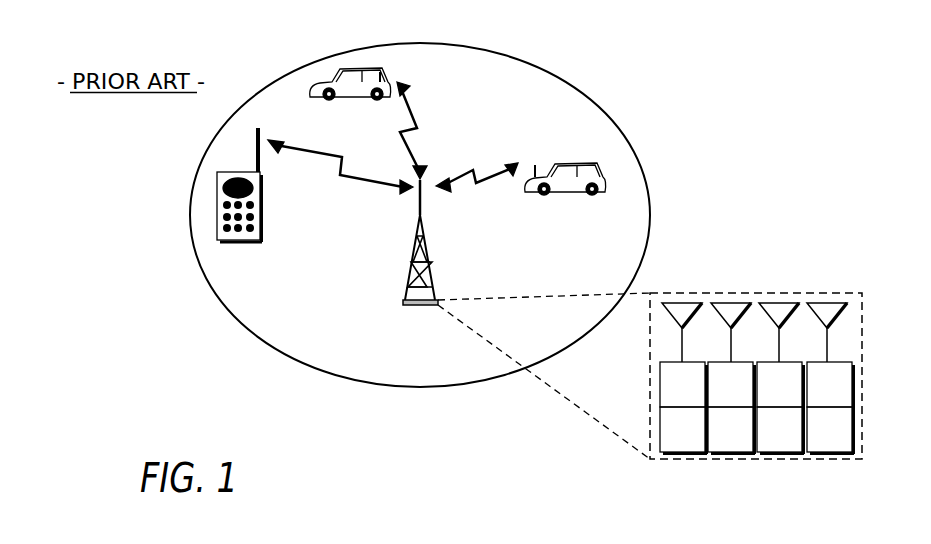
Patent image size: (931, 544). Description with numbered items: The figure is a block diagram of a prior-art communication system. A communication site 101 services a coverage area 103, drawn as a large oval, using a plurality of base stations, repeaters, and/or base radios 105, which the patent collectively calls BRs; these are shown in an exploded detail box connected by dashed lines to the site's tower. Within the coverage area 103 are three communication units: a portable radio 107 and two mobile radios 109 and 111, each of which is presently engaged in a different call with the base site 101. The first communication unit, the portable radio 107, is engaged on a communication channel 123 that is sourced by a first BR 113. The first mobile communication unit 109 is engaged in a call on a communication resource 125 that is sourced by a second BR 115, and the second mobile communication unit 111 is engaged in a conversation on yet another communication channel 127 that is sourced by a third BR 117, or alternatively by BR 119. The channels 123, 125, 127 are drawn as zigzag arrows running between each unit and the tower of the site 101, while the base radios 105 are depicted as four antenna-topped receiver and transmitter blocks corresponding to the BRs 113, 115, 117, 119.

The communication site 101 is at (420, 308).
The coverage area 103 is at (650, 228).
The base radios 105 is at (755, 293).
The portable radio 107 is at (222, 242).
The mobile radio 109 is at (380, 62).
The mobile radio 111 is at (535, 156).
The first BR 113 is at (670, 458).
The second BR 115 is at (718, 458).
The third BR 117 is at (768, 458).
The BR 119 is at (818, 458).
The communication channel 123 is at (300, 148).
The communication resource 125 is at (417, 118).
The communication channel 127 is at (485, 177).